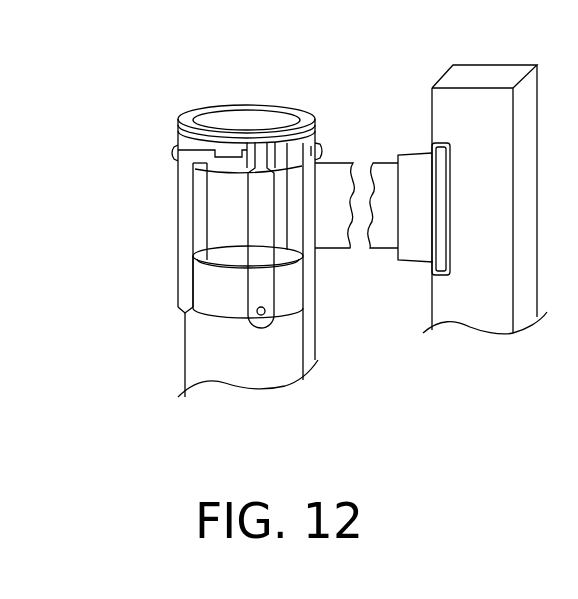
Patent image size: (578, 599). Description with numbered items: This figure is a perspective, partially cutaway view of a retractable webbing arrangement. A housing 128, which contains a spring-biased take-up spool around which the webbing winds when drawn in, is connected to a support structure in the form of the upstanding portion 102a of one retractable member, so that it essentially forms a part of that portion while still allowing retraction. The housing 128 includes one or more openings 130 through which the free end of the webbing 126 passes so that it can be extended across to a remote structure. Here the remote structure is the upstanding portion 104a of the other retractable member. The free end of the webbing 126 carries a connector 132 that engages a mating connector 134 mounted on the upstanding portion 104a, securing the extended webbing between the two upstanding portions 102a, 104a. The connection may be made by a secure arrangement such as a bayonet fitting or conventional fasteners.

The upstanding portion 102a is at (193, 342).
The upstanding portion 104a is at (490, 70).
The webbing 126 is at (335, 161).
The housing 128 is at (250, 118).
The openings 130 is at (195, 213).
The connector 132 is at (415, 263).
The mating connector 134 is at (443, 268).